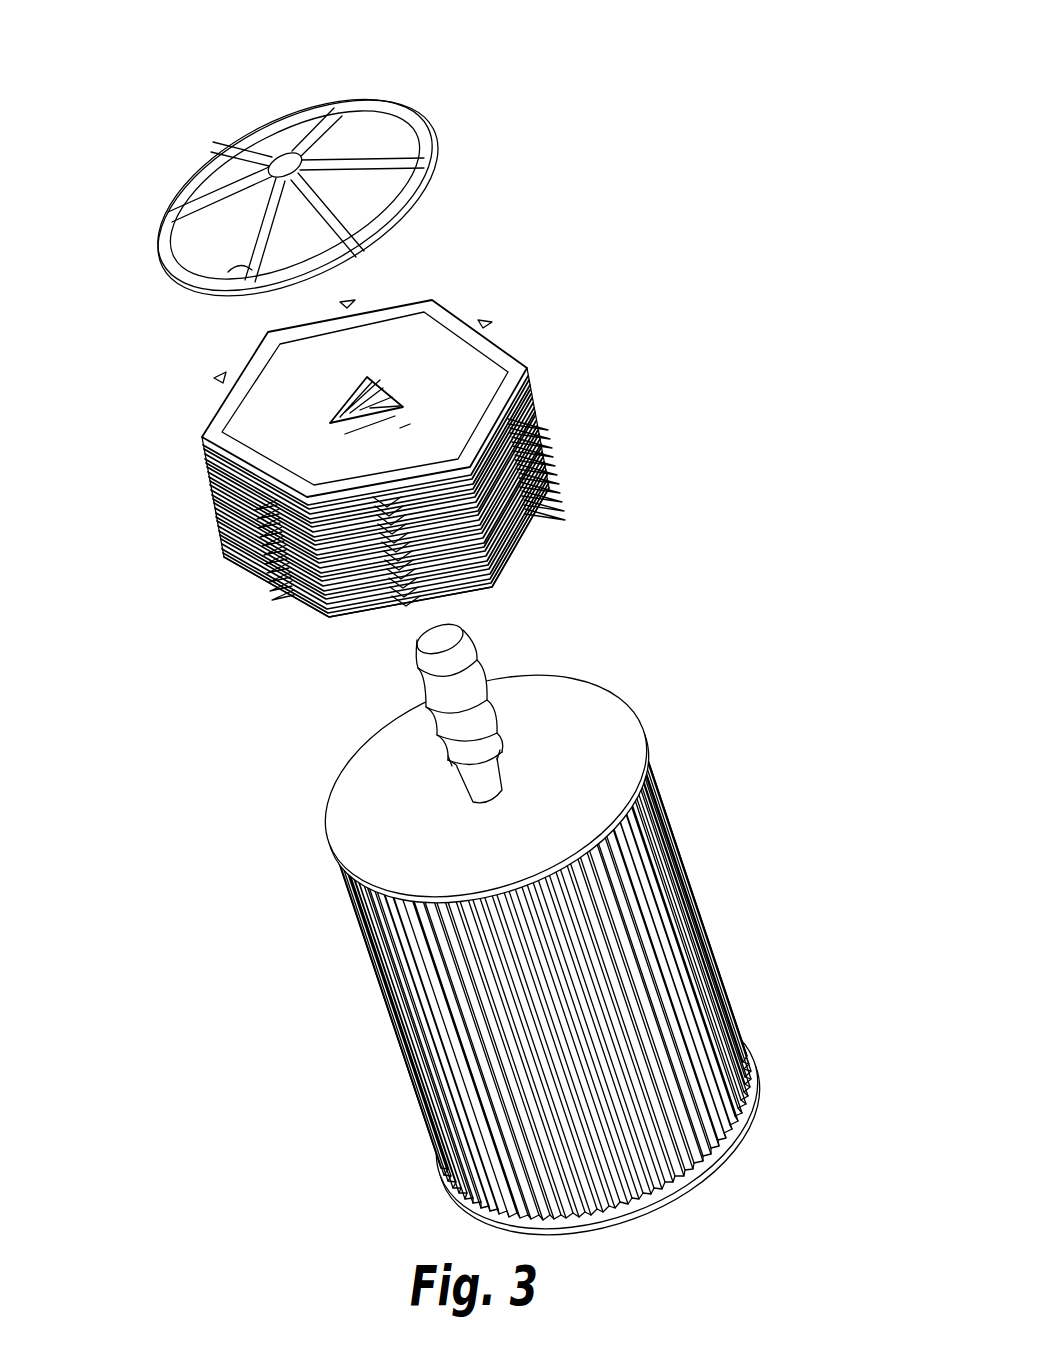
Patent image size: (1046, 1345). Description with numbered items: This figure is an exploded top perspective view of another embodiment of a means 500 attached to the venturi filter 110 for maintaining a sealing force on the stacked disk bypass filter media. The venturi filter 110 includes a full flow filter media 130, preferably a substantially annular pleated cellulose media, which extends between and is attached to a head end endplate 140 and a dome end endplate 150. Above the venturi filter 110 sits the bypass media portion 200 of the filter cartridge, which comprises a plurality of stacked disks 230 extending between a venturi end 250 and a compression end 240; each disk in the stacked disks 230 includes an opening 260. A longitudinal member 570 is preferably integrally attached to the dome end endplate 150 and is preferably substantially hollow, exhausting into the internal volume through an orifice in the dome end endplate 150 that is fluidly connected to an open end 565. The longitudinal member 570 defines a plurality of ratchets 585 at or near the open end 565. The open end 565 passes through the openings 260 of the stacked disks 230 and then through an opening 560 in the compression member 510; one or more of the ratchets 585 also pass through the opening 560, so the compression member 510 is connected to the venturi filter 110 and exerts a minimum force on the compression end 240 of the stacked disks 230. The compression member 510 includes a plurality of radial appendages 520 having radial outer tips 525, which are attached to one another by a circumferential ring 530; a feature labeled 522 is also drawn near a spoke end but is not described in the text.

The venturi filter 110 is at (357, 998).
The full flow filter media 130 is at (660, 888).
The head end endplate 140 is at (732, 1153).
The dome end endplate 150 is at (648, 740).
The bypass media portion 200 is at (513, 271).
The stacked disks 230 is at (240, 472).
The compression end 240 is at (447, 302).
The venturi end 250 is at (515, 558).
The opening 260 is at (368, 378).
The means for maintaining a sealing force 500 is at (150, 133).
The compression member 510 is at (392, 75).
The radial appendages 520 is at (262, 220).
The spoke end 522 is at (235, 268).
The radial outer tips 525 is at (175, 215).
The circumferential ring 530 is at (440, 141).
The opening 560 is at (286, 156).
The open end 565 is at (425, 634).
The longitudinal member 570 is at (488, 779).
The ratchets 585 is at (503, 757).